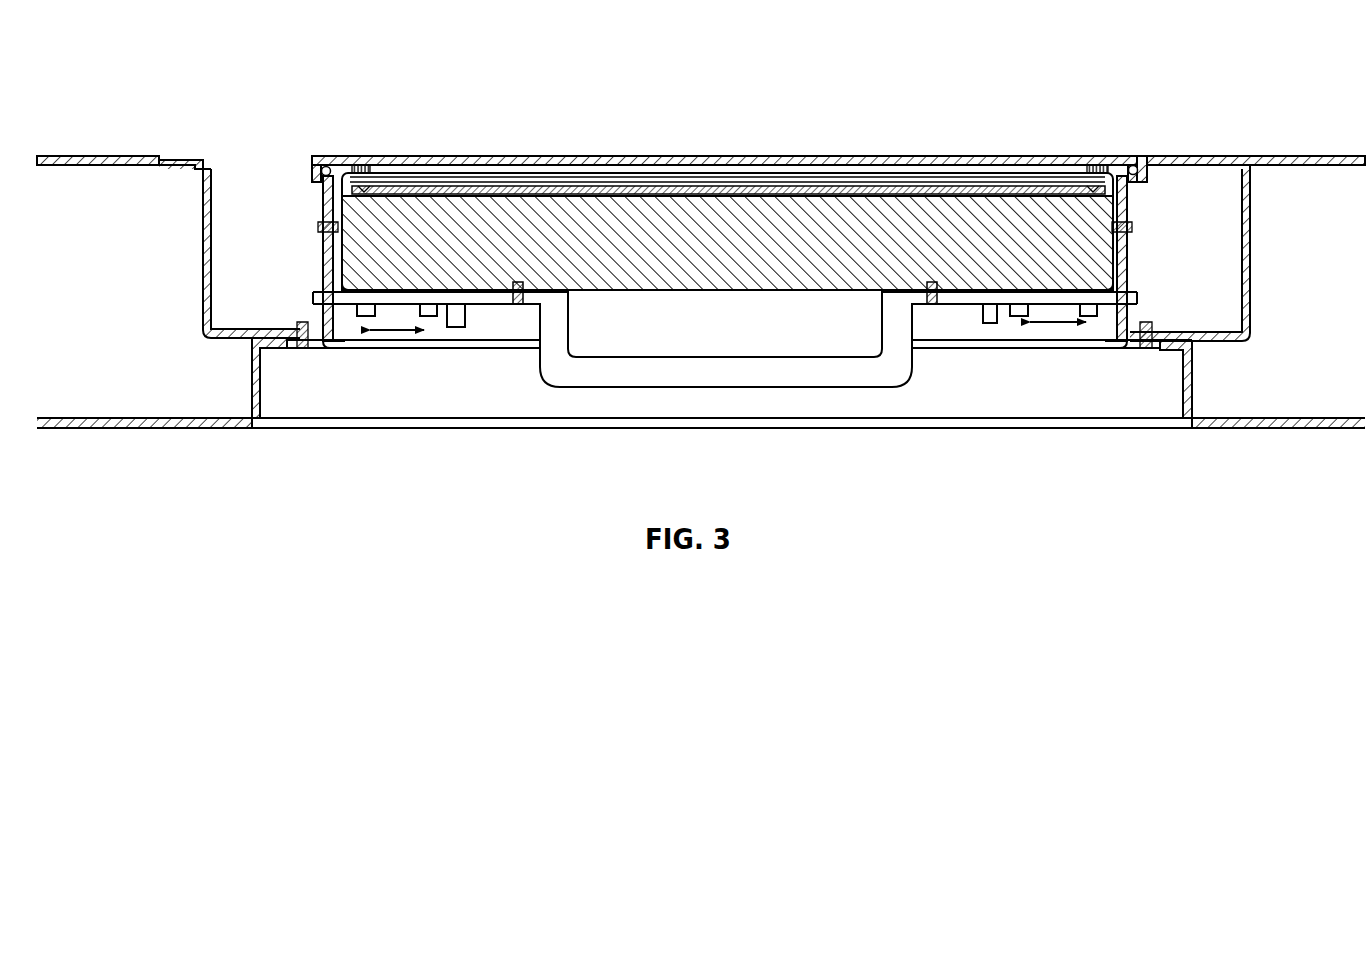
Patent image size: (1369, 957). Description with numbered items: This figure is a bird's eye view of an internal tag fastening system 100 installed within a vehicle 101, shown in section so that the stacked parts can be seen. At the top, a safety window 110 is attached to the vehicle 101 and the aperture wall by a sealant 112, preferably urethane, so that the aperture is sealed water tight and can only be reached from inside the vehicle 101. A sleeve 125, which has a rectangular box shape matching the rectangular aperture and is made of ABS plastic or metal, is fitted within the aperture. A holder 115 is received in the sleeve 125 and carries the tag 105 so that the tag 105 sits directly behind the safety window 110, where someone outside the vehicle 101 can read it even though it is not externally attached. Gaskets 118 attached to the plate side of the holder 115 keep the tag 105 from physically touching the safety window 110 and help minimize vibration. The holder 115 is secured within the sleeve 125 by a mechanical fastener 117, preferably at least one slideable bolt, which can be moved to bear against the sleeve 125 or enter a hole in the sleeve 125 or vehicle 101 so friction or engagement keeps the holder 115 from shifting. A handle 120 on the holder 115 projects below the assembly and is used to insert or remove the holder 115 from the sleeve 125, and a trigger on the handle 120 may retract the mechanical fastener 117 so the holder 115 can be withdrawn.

The internal tag fastening system 100 is at (212, 102).
The vehicle 101 is at (135, 165).
The tag 105 is at (460, 190).
The safety window 110 is at (575, 156).
The sealant 112 is at (1136, 166).
The holder 115 is at (718, 250).
The mechanical fastener 117 is at (392, 320).
The gasket 118 is at (1097, 165).
The handle 120 is at (682, 375).
The sleeve 125 is at (1140, 332).